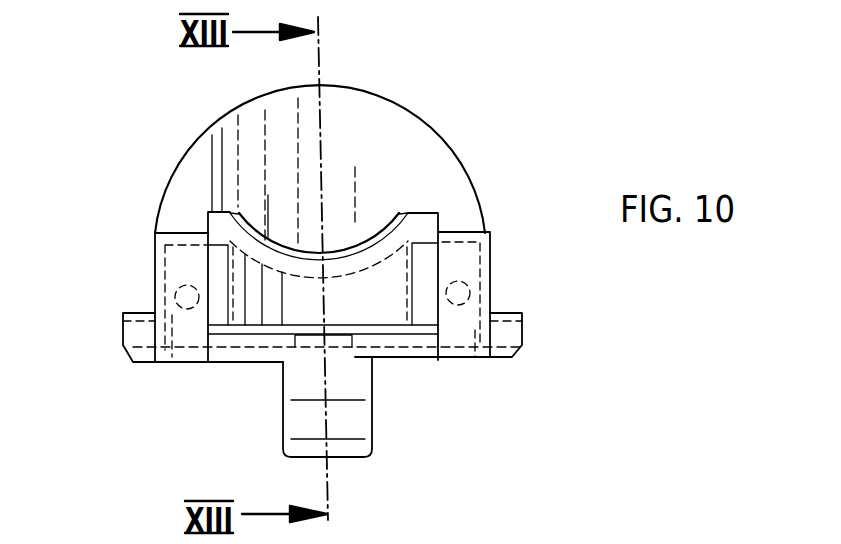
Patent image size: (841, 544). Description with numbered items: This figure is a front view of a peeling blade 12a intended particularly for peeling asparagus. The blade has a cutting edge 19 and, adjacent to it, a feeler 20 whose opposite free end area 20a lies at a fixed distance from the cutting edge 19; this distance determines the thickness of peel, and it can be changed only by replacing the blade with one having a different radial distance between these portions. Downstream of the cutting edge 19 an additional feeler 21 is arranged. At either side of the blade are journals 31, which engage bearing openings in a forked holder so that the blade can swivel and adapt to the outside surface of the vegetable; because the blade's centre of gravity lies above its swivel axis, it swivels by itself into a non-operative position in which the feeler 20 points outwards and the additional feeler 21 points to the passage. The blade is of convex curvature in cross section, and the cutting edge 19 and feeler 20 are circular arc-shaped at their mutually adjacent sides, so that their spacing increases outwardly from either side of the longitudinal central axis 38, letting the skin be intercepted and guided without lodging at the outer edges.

The peeling blade 12a is at (177, 126).
The cutting edge 19 is at (291, 246).
The feeler 20 is at (447, 162).
The free end area of the feeler 20a is at (306, 278).
The additional feeler 21 is at (358, 412).
The journal 31 is at (133, 332).
The longitudinal central axis 38 is at (328, 180).